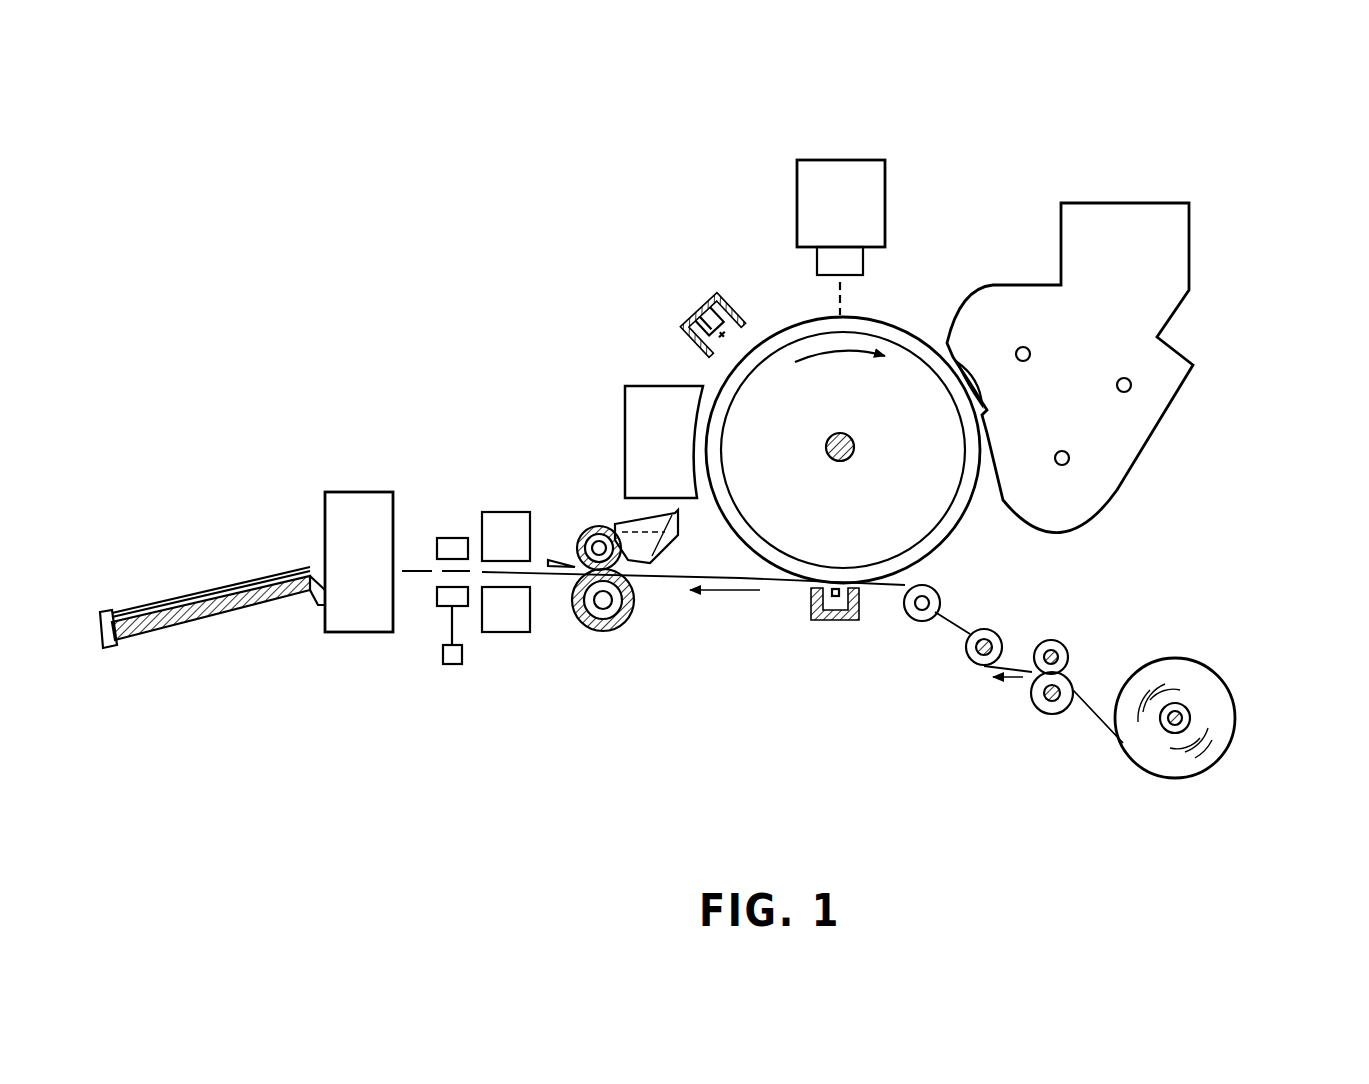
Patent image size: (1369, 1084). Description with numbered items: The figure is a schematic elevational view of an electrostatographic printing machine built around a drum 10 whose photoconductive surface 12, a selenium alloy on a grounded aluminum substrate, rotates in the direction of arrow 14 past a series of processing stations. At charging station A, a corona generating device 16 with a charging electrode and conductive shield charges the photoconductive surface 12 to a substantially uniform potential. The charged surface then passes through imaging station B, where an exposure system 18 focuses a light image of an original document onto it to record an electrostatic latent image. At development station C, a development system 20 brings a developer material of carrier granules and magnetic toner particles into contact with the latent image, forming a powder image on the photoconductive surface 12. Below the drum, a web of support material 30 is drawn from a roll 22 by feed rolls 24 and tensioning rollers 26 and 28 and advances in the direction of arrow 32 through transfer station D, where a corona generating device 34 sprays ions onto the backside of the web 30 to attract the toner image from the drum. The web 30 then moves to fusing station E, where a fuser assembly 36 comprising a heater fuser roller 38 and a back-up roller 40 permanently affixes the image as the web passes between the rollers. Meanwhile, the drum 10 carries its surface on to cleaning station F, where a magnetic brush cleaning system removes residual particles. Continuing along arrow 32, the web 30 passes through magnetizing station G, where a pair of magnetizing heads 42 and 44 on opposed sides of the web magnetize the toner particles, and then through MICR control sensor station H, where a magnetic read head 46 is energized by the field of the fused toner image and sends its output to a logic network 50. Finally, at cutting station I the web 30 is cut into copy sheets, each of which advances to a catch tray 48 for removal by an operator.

The drum 10 is at (892, 303).
The photoconductive surface 12 is at (923, 347).
The arrow 14 is at (835, 360).
The corona generating device 16 is at (750, 303).
The exposure system 18 is at (872, 147).
The development system 20 is at (1210, 255).
The roll 22 is at (1162, 775).
The feed rolls 24 is at (1065, 640).
The tensioning roller 26 is at (987, 630).
The tensioning roller 28 is at (918, 622).
The web of support material 30 is at (1085, 700).
The arrow 32 is at (738, 592).
The corona generating device 34 is at (806, 625).
The fuser assembly 36 is at (578, 530).
The heater fuser roller 38 is at (600, 522).
The back-up roller 40 is at (620, 635).
The magnetizing head 42 is at (510, 635).
The magnetizing head 44 is at (482, 520).
The magnetic read head 46 is at (430, 612).
The catch tray 48 is at (222, 622).
The logic network 50 is at (452, 670).
The charging station A is at (698, 295).
The imaging station B is at (900, 200).
The development station C is at (1205, 345).
The transfer station D is at (838, 628).
The fusing station E is at (585, 632).
The cleaning station F is at (650, 370).
The magnetizing station G is at (510, 497).
The MICR control sensor station H is at (452, 530).
The cutting station I is at (362, 470).